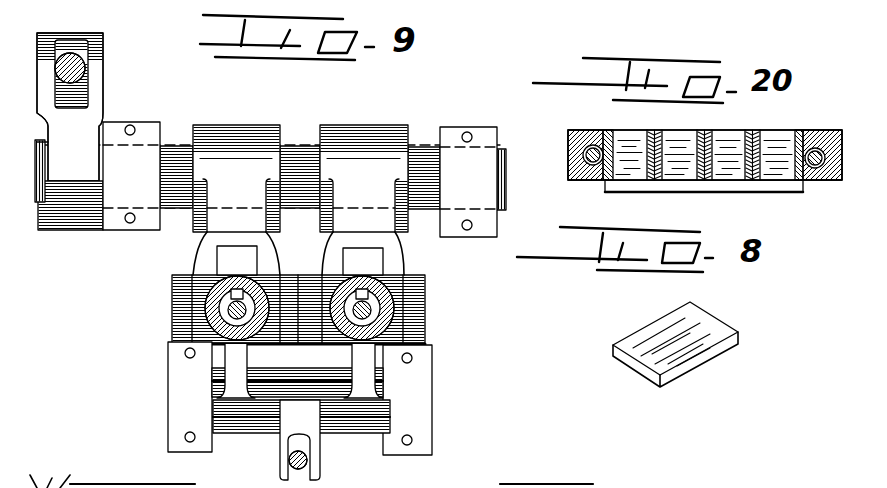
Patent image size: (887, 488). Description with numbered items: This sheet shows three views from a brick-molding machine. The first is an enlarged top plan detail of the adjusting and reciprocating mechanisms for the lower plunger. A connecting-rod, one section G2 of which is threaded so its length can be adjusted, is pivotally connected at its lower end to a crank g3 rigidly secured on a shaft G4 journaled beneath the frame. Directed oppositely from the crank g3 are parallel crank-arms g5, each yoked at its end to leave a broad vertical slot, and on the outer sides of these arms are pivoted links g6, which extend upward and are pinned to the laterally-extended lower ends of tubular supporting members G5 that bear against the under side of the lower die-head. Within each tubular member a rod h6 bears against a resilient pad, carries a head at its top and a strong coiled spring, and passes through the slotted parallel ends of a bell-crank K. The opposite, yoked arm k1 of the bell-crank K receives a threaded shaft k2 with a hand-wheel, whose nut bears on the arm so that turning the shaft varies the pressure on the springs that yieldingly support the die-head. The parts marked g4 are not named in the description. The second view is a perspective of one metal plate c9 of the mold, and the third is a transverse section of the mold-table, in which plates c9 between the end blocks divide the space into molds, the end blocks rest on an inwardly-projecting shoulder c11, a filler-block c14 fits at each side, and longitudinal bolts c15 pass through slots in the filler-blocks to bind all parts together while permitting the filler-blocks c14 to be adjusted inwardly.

In FIG. 9, the connecting-rod section G2 is at (82, 72).
In FIG. 9, the crank g3 is at (96, 89).
In FIG. 9, the bearing bracket g4 is at (141, 128).
In FIG. 9, the crank-arms g5 is at (228, 148).
In FIG. 9, the shaft G4 is at (293, 164).
In FIG. 9, the rod h6 is at (197, 273).
In FIG. 9, the links g6 is at (188, 290).
In FIG. 9, the tubular supporting members G5 is at (178, 318).
In FIG. 9, the bell-crank K is at (357, 355).
In FIG. 9, the arm of bell-crank k1 is at (298, 428).
In FIG. 9, the shaft k2 is at (297, 466).
In FIG. 20, the filler-block c14 is at (583, 147).
In FIG. 20, the longitudinal bolts c15 is at (611, 123).
In FIG. 20, the plates of metal c9 is at (660, 136).
In FIG. 8, the plates of metal c9 is at (702, 337).
In FIG. 20, the shoulder c11 is at (697, 191).